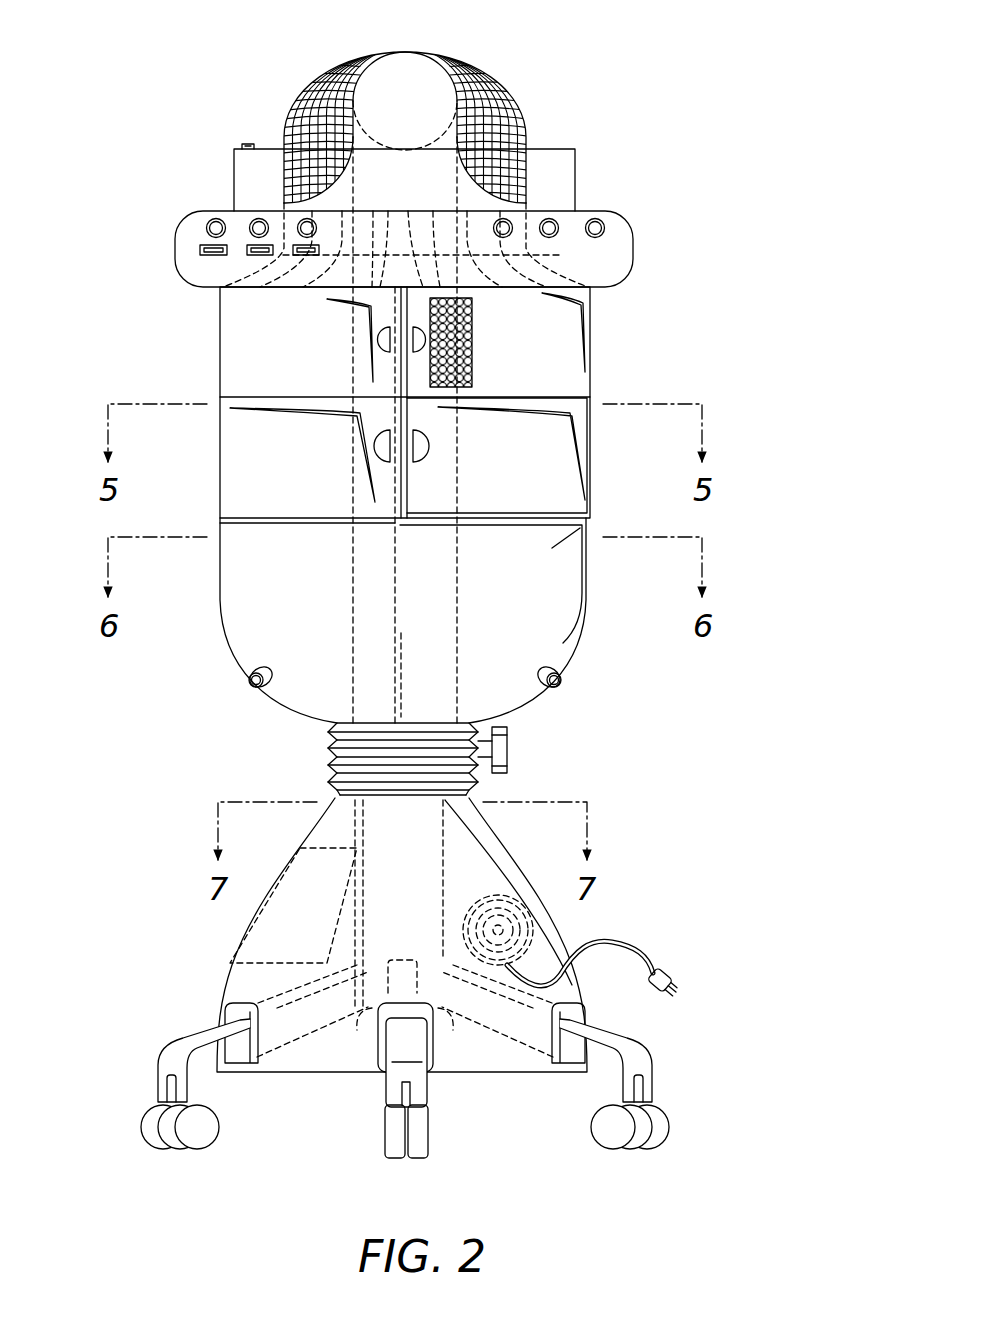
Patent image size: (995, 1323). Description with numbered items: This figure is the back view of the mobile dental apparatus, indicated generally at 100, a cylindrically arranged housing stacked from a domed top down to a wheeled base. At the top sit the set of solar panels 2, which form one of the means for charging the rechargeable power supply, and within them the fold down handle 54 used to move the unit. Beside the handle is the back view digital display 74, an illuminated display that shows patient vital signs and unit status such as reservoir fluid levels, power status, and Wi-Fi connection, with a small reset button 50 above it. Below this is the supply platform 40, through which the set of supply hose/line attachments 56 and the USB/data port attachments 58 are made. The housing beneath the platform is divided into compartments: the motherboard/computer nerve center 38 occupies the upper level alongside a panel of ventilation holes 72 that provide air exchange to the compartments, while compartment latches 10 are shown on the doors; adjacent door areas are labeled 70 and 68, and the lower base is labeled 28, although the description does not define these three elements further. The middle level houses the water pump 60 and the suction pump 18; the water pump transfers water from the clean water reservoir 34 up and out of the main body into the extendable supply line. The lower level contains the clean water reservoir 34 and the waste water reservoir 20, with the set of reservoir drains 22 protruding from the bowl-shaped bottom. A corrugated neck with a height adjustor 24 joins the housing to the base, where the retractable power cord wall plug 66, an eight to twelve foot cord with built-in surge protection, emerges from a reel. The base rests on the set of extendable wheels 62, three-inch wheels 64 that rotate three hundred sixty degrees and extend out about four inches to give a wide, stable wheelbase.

The vacuum cleaner apparatus 100 is at (158, 60).
The solar panels 2 is at (325, 75).
The fold down handle 54 is at (425, 65).
The reset button 50 is at (245, 143).
The digital display 74 is at (550, 160).
The supply platform 40 is at (612, 258).
The supply hose/line attachments 56 is at (212, 222).
The USB/data port attachments 58 is at (200, 250).
The motherboard/computer nerve center 38 is at (250, 337).
The ventilation holes 72 is at (470, 330).
The upper right door 70 is at (567, 366).
The water pump 60 is at (248, 440).
The compartment latches 10 is at (425, 448).
The suction pump 18 is at (553, 488).
The inner panel corner 68 is at (552, 548).
The clean water reservoir 34 is at (250, 565).
The waste water reservoir 20 is at (565, 565).
The reservoir drains 22 is at (248, 684).
The height adjustor 24 is at (503, 750).
The base 28 is at (222, 968).
The retractable power cord wall plug 66 is at (640, 947).
The extendable wheels 62 is at (175, 1044).
The 360 degree rotating and extendable wheels 64 is at (680, 1122).